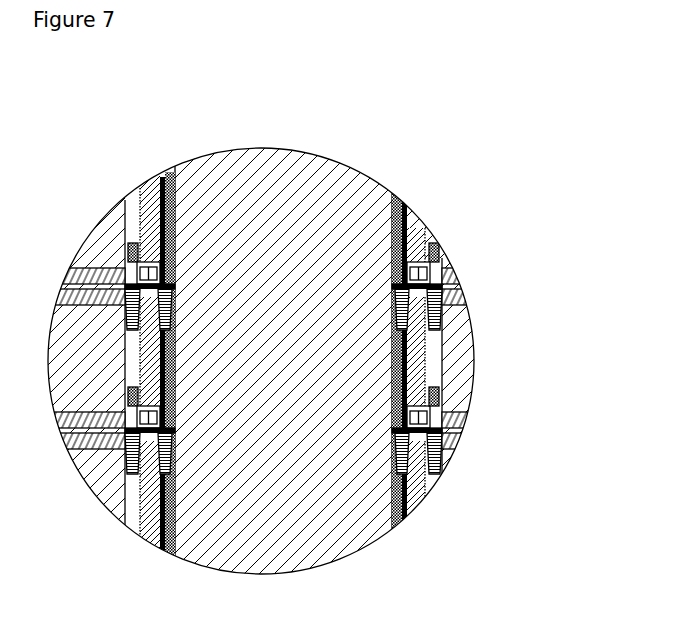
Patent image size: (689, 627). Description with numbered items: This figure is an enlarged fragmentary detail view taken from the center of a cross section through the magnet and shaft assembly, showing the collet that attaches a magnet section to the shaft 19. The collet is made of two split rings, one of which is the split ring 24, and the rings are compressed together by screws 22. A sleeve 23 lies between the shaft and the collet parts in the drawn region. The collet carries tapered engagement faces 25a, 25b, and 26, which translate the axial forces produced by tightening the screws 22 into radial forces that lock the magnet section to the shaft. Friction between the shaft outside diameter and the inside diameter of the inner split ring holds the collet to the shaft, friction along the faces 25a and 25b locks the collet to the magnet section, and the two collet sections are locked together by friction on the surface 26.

The shaft 19 is at (298, 268).
The screws 22 is at (433, 305).
The sleeve 23 is at (416, 364).
The split ring 24 is at (432, 398).
The tapered engagement face 25a is at (460, 422).
The tapered engagement face 25b is at (460, 445).
The tapered engagement face 26 is at (417, 457).